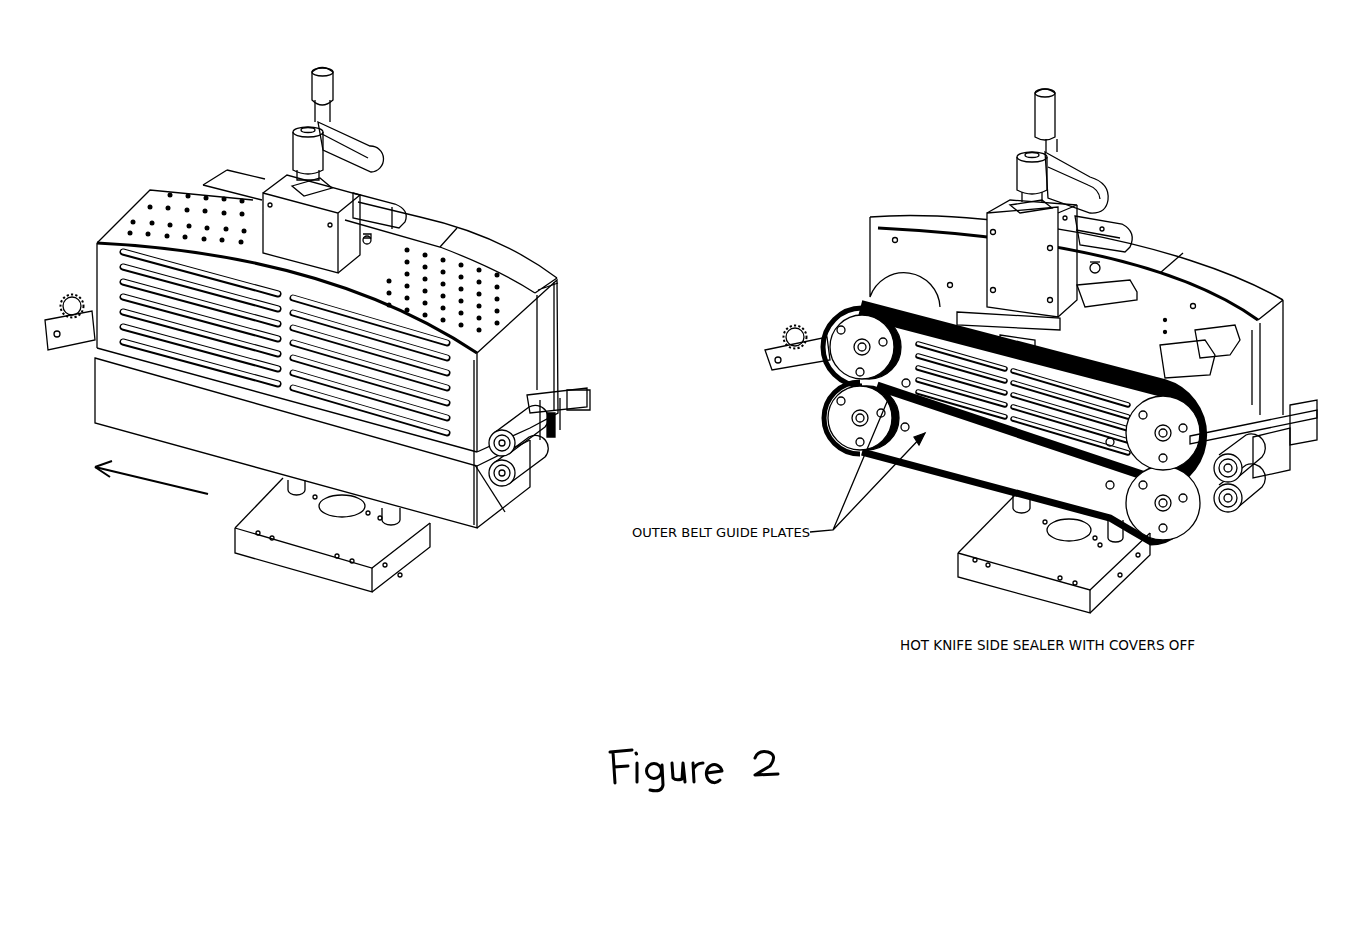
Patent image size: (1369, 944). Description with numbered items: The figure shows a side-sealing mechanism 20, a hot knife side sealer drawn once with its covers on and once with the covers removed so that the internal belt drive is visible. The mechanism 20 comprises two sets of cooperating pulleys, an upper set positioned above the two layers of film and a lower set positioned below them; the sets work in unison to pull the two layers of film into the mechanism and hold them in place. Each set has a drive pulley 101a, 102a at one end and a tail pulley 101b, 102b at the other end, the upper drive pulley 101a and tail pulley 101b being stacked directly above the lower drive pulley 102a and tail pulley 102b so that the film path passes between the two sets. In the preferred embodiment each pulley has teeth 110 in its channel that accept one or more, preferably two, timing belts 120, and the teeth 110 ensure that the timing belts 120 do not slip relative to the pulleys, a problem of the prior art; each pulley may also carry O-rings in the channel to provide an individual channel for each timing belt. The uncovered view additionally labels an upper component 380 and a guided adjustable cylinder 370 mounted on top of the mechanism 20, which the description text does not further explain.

The side-sealing mechanism 20 is at (485, 140).
The handle knob 380 is at (1055, 112).
The guided adjustable cylinder 370 is at (987, 217).
The teeth 110 is at (858, 305).
The drive pulley 101a is at (832, 327).
The tail pulley 101b is at (1307, 420).
The drive pulley 102a is at (847, 427).
The tail pulley 102b is at (1180, 520).
The timing belts 120 is at (967, 482).